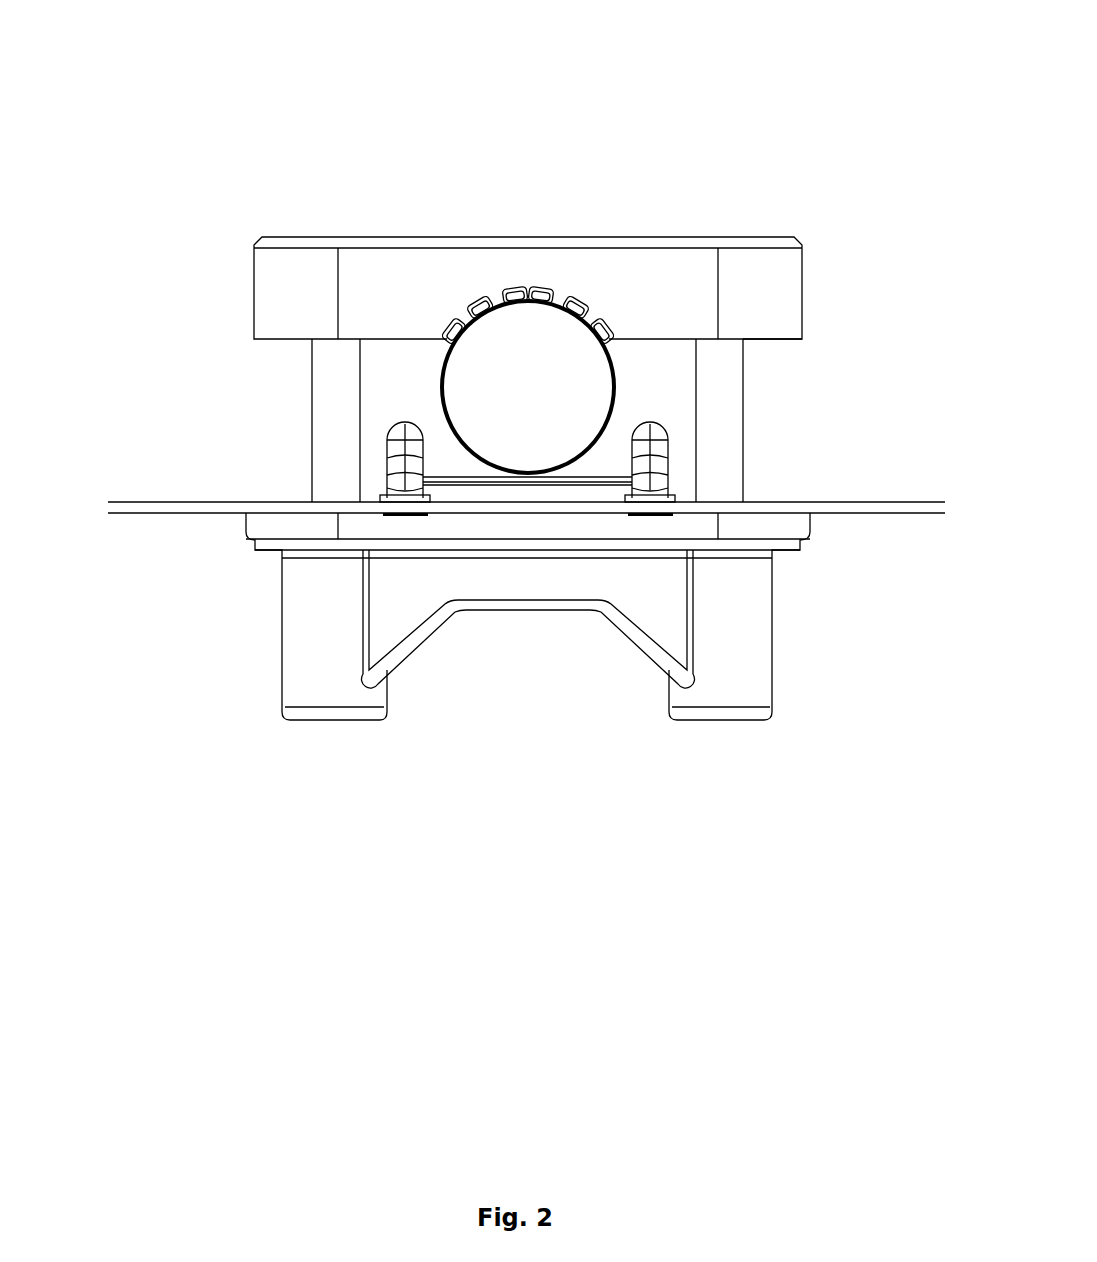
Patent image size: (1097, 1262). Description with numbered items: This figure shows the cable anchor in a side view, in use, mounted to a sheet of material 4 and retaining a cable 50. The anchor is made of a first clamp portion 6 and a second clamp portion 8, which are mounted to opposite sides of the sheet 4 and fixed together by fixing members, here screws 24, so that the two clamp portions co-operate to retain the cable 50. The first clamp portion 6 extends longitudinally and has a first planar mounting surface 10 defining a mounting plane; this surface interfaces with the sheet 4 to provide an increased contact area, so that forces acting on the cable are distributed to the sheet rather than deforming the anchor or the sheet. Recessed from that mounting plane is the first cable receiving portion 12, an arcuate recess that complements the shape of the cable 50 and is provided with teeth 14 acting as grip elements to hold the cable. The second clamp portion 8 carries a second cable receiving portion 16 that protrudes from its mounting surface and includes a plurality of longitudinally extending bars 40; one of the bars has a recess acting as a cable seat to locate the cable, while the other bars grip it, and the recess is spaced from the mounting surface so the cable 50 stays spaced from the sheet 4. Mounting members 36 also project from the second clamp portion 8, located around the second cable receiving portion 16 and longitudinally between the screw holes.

The sheet of material 4 is at (145, 525).
The first clamp portion 6 is at (655, 258).
The second clamp portion 8 is at (745, 682).
The first planar mounting surface 10 is at (768, 343).
The first cable receiving portion 12 is at (490, 287).
The teeth 14 is at (538, 288).
The second cable receiving portion 16 is at (482, 490).
The screws 24 is at (312, 396).
The mounting members 36 is at (383, 478).
The bars 40 is at (540, 505).
The cable 50 is at (505, 395).